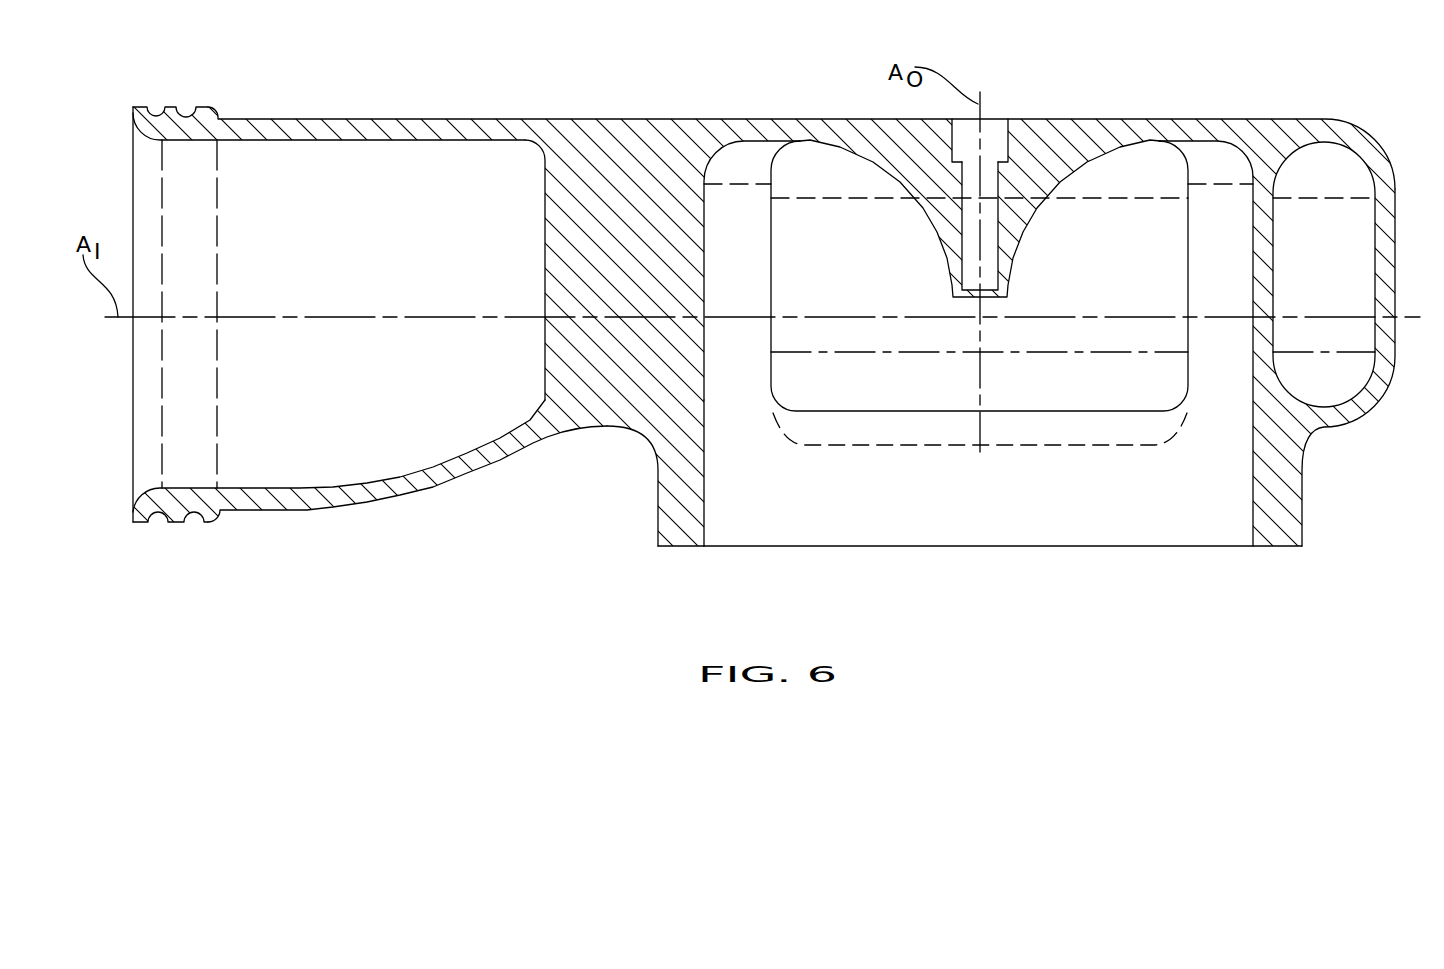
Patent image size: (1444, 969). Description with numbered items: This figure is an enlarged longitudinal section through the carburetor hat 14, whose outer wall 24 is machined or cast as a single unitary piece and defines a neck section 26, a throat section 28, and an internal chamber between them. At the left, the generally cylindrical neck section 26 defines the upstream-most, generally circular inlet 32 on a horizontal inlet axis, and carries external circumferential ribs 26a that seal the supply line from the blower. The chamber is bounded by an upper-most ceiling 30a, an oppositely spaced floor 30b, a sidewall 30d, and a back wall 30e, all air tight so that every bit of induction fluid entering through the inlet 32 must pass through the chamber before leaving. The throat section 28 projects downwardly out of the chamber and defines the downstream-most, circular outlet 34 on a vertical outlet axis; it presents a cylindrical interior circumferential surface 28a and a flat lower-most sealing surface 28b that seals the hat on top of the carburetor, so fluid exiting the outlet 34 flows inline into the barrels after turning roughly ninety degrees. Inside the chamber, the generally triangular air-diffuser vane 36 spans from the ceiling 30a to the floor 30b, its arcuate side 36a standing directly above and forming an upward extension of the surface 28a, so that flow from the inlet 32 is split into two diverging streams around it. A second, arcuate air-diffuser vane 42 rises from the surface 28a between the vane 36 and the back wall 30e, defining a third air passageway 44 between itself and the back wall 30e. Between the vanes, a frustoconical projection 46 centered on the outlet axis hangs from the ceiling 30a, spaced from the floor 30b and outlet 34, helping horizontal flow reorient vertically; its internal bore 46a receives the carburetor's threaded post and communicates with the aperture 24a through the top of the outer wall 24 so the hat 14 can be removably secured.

The carburetor hat 14 is at (565, 598).
The outer wall 24 is at (536, 118).
The aperture 24a is at (990, 119).
The neck section 26 is at (300, 511).
The external circumferential ribs 26a is at (177, 524).
The throat section 28 is at (658, 520).
The interior circumferential surface 28a is at (707, 517).
The lower-most sealing surface 28b is at (680, 548).
The ceiling 30a is at (405, 142).
The floor 30b is at (403, 470).
The sidewall 30d is at (371, 309).
The back wall 30e is at (1373, 283).
The inlet 32 is at (188, 431).
The outlet 34 is at (1153, 507).
The air-diffuser vane 36 is at (558, 240).
The side 36a is at (748, 282).
The additional air-diffuser vane 42 is at (1262, 243).
The third air passageway 44 is at (1325, 370).
The frustoconical projection 46 is at (1020, 242).
The internal bore 46a is at (989, 289).